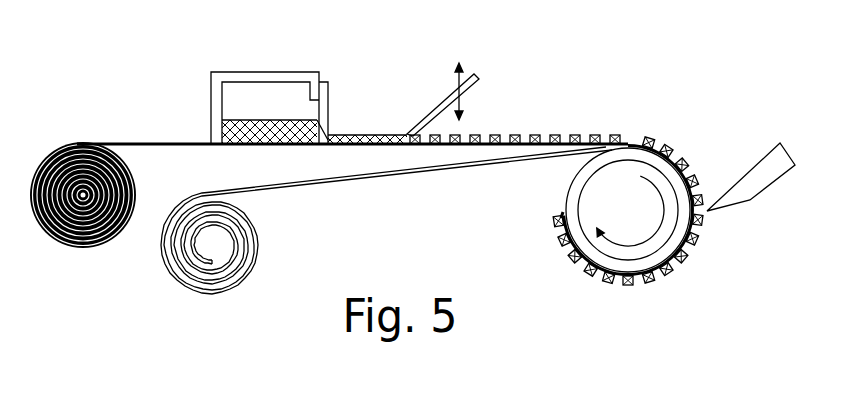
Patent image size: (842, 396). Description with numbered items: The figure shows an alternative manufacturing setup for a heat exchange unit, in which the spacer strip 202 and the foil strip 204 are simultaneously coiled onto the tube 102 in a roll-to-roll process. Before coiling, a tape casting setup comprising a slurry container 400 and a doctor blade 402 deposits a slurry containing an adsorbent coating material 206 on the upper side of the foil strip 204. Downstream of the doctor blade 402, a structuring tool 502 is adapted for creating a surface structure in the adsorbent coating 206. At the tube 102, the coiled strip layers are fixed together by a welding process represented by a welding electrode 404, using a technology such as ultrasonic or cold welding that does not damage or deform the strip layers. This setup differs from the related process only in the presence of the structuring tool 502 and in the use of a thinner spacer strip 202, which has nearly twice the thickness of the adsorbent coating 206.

The tube 102 is at (565, 197).
The spacer strip 202 is at (243, 289).
The foil strip 204 is at (87, 248).
The adsorbent coating 206 is at (376, 134).
The slurry container 400 is at (231, 71).
The doctor blade 402 is at (329, 87).
The welding electrode 404 is at (757, 198).
The structuring tool 502 is at (480, 75).